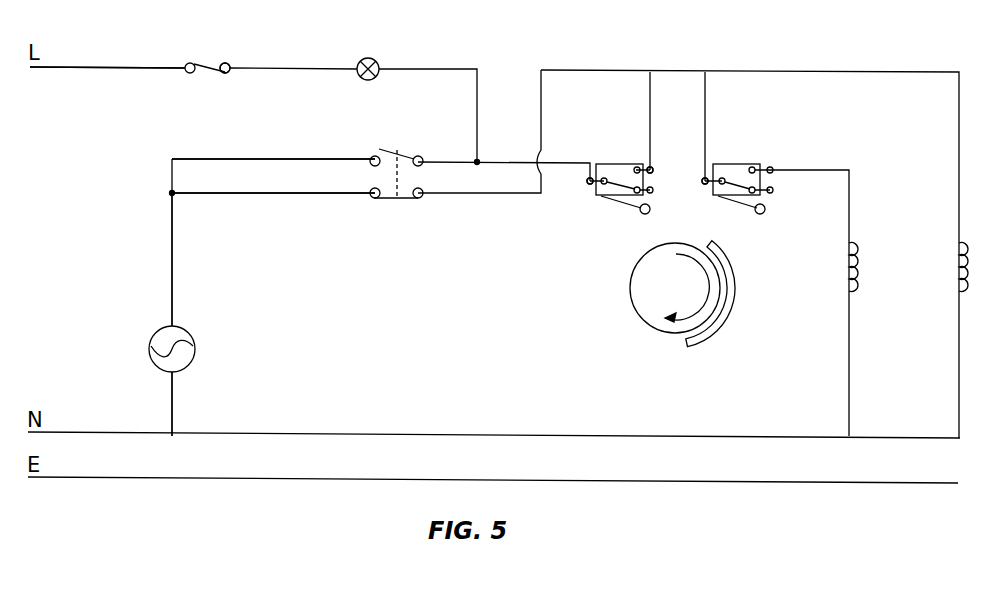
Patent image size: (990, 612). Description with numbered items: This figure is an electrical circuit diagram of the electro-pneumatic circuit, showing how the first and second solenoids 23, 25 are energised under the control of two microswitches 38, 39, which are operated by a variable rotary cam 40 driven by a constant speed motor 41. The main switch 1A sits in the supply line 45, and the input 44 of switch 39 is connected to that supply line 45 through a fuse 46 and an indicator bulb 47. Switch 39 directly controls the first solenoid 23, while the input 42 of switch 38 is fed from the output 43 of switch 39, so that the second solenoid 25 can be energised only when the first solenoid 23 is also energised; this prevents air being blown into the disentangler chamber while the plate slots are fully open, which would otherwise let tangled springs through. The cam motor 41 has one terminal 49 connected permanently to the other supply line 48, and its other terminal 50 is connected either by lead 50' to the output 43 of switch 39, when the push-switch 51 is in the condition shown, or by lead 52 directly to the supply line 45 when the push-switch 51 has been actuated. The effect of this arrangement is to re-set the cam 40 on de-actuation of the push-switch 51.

The main switch 1A is at (207, 52).
The supply line 45 is at (95, 67).
The fuse 46 is at (224, 73).
The indicator bulb 47 is at (377, 61).
The lead 52 is at (275, 159).
The lead 50' is at (273, 214).
The push-switch 51 is at (392, 197).
The terminal 50 is at (201, 259).
The constant speed motor 41 is at (181, 360).
The terminal 49 is at (172, 387).
The supply line 48 is at (75, 432).
The microswitch 39 is at (610, 163).
The output 43 is at (654, 169).
The input 44 is at (589, 186).
The microswitch 38 is at (739, 160).
The input 42 is at (706, 194).
The variable rotary cam 40 is at (652, 316).
The second solenoid 25 is at (844, 276).
The first solenoid 23 is at (950, 267).